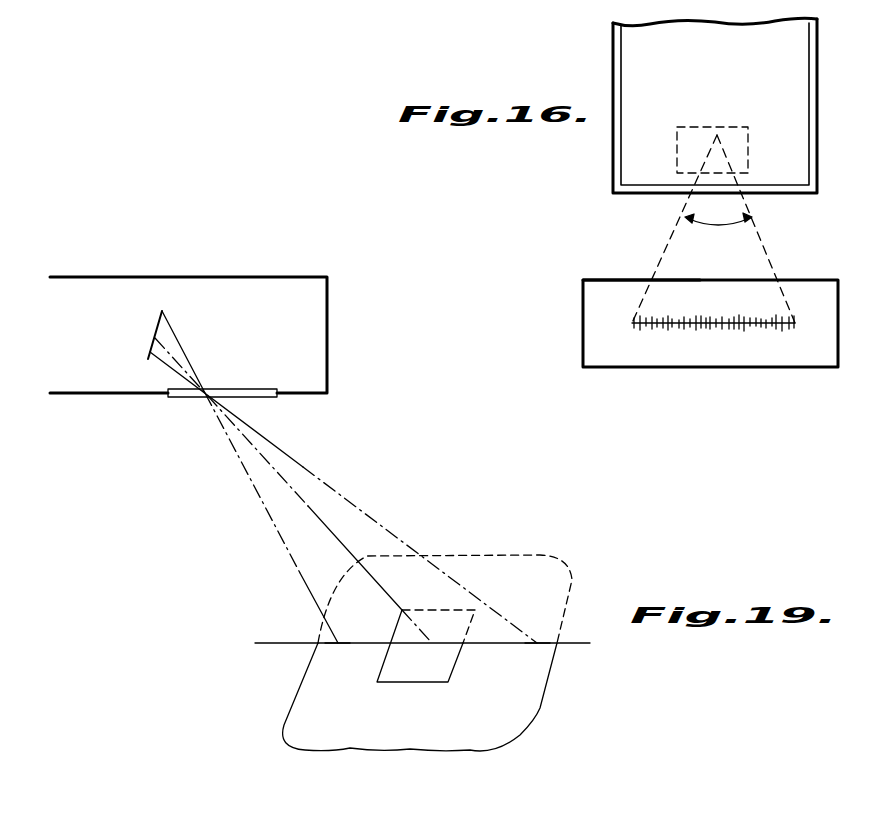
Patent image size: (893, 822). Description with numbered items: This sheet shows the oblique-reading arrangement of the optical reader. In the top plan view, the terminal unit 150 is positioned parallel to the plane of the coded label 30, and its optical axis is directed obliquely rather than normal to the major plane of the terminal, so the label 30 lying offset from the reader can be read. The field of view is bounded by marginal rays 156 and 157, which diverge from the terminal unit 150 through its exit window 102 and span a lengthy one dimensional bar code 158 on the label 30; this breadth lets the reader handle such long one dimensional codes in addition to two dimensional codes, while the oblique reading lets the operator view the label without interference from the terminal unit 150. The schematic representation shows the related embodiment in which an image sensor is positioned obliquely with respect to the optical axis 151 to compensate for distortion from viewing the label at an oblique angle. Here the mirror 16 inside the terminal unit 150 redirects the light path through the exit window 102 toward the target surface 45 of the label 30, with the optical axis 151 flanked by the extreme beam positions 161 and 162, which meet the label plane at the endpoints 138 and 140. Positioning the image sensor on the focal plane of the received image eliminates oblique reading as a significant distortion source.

In FIG. 19, the scanning mirror 16 is at (163, 313).
In FIG. 16, the label 30 is at (823, 280).
In FIG. 19, the label 30 is at (432, 668).
In FIG. 16, the target surface 45 is at (596, 287).
In FIG. 16, the exit window 102 is at (757, 113).
In FIG. 19, the exit window 102 is at (278, 398).
In FIG. 19, the first scan endpoint 138 is at (336, 644).
In FIG. 19, the second scan endpoint 140 is at (537, 643).
In FIG. 16, the terminal unit 150 is at (765, 62).
In FIG. 19, the terminal unit 150 is at (275, 314).
In FIG. 19, the optical axis 151 is at (313, 506).
In FIG. 16, the marginal ray 156 is at (672, 233).
In FIG. 16, the marginal ray 157 is at (767, 252).
In FIG. 16, the one dimensional bar code 158 is at (726, 328).
In FIG. 19, the first beam extreme position 161 is at (361, 507).
In FIG. 19, the second beam extreme position 162 is at (281, 537).